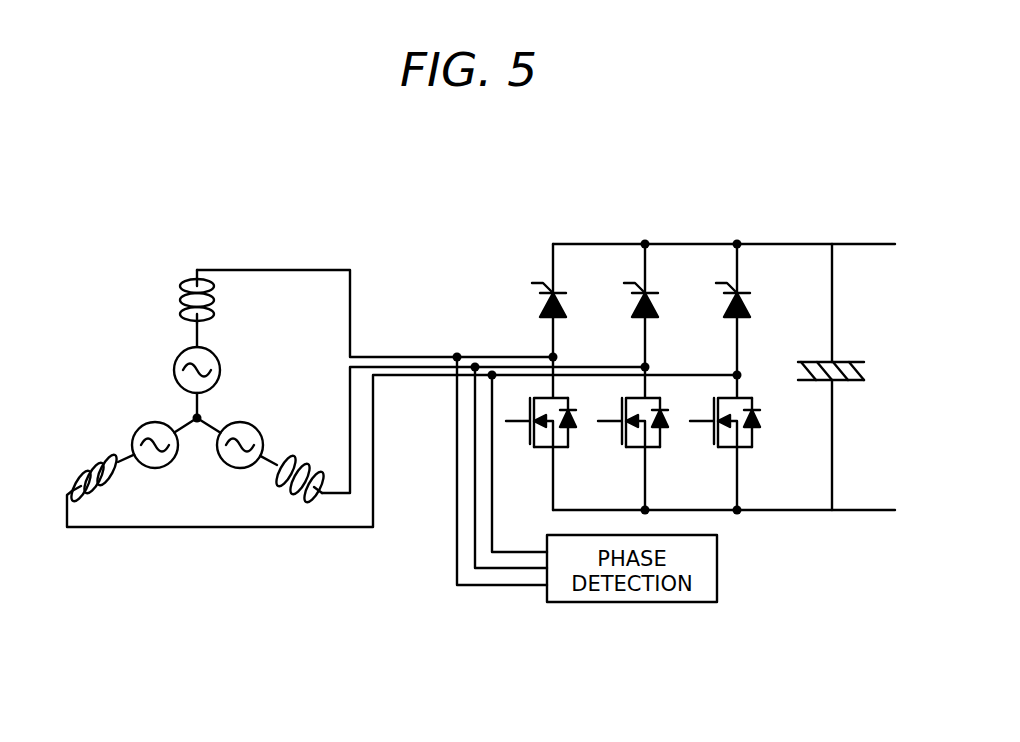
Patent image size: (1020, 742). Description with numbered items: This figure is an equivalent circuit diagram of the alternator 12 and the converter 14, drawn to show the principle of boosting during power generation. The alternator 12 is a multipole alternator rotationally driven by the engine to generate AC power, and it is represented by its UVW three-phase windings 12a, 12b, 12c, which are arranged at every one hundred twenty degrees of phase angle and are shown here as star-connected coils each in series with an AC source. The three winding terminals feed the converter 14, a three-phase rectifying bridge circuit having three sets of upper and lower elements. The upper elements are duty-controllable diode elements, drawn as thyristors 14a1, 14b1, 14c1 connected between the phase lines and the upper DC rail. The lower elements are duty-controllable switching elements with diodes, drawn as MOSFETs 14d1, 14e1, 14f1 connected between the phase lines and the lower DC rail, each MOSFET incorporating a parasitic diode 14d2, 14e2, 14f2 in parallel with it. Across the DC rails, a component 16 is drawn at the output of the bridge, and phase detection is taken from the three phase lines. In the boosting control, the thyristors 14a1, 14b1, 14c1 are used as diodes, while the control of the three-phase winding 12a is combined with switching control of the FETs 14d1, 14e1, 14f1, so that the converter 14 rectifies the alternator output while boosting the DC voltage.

The alternator 12 is at (150, 375).
The three-phase winding 12a is at (180, 293).
The three-phase winding 12b is at (305, 458).
The three-phase winding 12c is at (115, 485).
The converter 14 is at (825, 210).
The thyristor 14a1 is at (565, 292).
The thyristor 14b1 is at (657, 292).
The thyristor 14c1 is at (747, 292).
The MOSFET 14d1 is at (545, 438).
The parasitic diode 14d2 is at (570, 440).
The MOSFET 14e1 is at (637, 438).
The parasitic diode 14e2 is at (679, 452).
The MOSFET 14f1 is at (729, 438).
The parasitic diode 14f2 is at (771, 452).
The output capacitor 16 is at (855, 361).